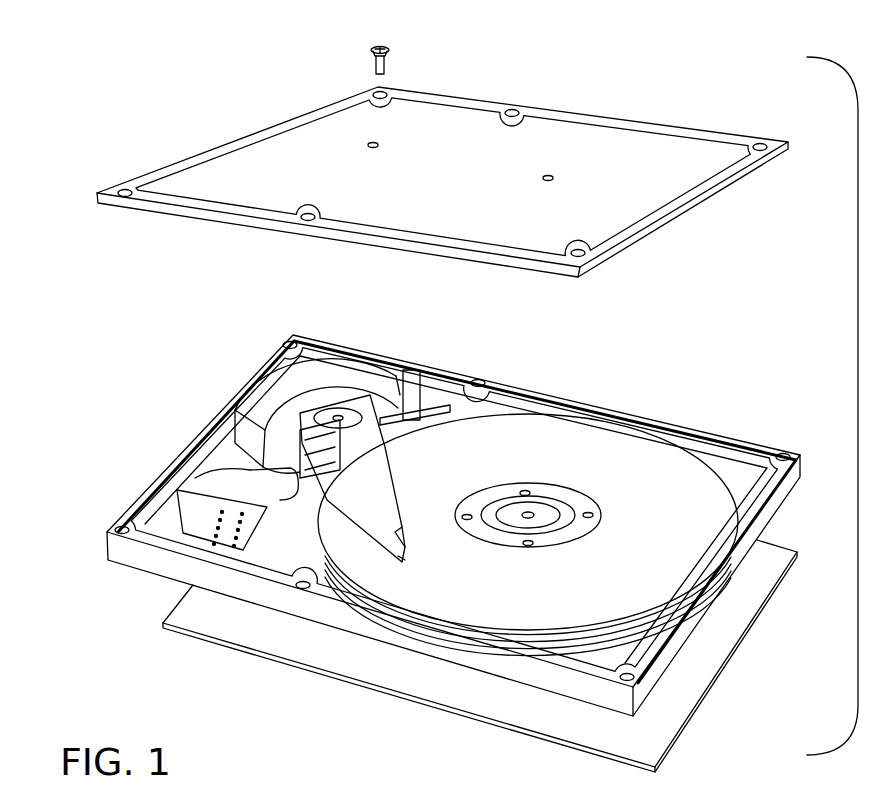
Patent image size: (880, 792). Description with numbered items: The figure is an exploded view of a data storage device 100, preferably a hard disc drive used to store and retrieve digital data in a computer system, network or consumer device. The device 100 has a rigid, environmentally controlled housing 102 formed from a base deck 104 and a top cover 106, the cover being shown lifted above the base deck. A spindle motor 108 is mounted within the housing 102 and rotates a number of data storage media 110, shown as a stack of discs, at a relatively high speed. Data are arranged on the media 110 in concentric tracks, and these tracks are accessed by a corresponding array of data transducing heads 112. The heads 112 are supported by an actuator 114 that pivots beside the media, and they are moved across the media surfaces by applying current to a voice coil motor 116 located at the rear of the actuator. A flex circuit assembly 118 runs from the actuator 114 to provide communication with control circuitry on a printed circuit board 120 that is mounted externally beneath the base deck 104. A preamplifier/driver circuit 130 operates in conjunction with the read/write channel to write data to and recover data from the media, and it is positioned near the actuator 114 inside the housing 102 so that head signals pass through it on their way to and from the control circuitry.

The data storage device 100 is at (155, 96).
The housing 102 is at (145, 333).
The base deck 104 is at (710, 608).
The top cover 106 is at (543, 133).
The spindle motor 108 is at (527, 503).
The data storage media 110 is at (553, 633).
The data transducing heads 112 is at (402, 565).
The actuator 114 is at (375, 487).
The voice coil motor 116 is at (320, 378).
The flex circuit assembly 118 is at (230, 478).
The printed circuit board 120 is at (262, 650).
The preamplifier/driver circuit 130 is at (308, 468).